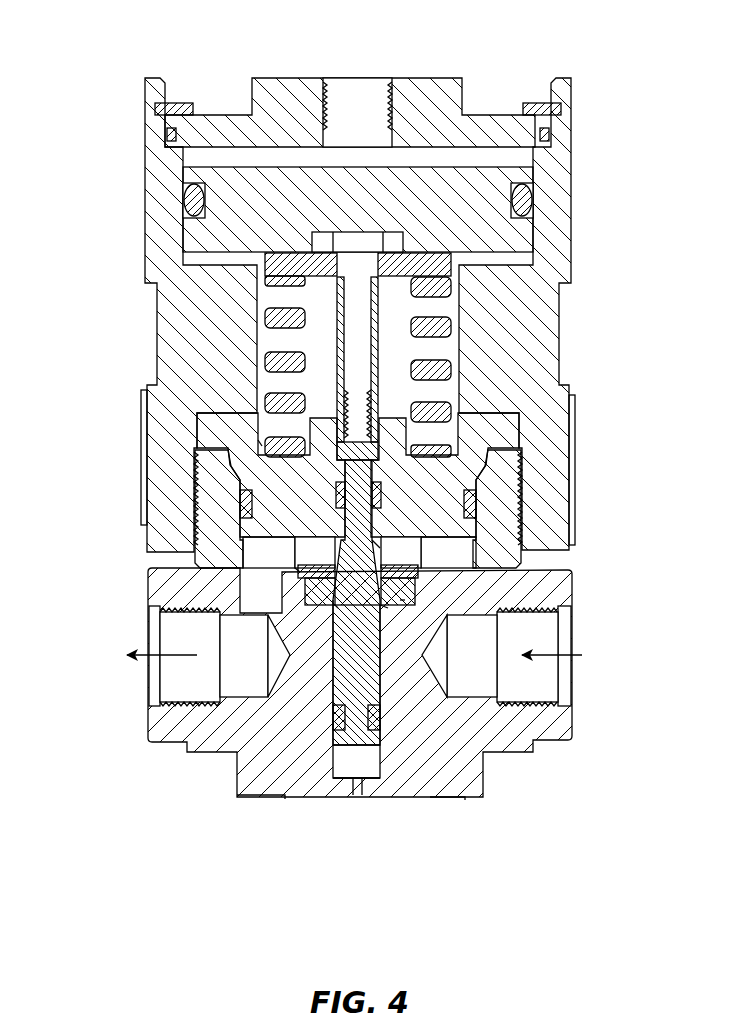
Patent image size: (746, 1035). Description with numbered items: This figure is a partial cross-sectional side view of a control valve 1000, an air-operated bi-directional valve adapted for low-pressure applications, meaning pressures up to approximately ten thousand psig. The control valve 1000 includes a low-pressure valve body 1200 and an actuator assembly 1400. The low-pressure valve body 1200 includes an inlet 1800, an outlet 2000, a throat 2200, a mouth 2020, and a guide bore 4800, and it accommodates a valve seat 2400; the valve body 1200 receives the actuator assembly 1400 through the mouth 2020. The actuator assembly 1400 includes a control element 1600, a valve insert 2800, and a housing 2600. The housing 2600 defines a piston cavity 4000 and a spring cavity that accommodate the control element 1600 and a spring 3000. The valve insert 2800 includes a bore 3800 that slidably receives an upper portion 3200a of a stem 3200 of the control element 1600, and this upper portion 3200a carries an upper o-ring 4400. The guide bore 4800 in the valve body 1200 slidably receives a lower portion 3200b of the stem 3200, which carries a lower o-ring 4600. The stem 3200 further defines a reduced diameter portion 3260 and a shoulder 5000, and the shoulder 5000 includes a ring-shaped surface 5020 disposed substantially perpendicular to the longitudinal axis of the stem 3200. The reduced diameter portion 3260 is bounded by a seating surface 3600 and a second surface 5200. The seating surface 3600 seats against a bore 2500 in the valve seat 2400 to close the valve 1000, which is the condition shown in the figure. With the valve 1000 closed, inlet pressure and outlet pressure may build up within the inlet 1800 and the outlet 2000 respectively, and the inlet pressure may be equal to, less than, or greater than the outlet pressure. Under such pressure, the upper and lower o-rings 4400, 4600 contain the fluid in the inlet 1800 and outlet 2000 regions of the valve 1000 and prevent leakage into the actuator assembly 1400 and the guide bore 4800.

The control valve 1000 is at (576, 56).
The low-pressure valve body 1200 is at (582, 590).
The actuator assembly 1400 is at (582, 240).
The control element 1600 is at (328, 337).
The inlet 1800 is at (550, 680).
The outlet 2000 is at (157, 682).
The mouth 2020 is at (215, 462).
The throat 2200 is at (400, 600).
The valve seat 2400 is at (322, 583).
The bore 2500 is at (388, 608).
The housing 2600 is at (553, 195).
The valve insert 2800 is at (520, 413).
The spring 3000 is at (445, 325).
The stem 3200 is at (358, 385).
The upper portion 3200a is at (262, 446).
The lower portion 3200b is at (345, 795).
The reduced diameter portion 3260 is at (362, 553).
The seating surface 3600 is at (300, 568).
The bore 3800 is at (380, 523).
The piston cavity 4000 is at (482, 153).
The upper o-ring 4400 is at (243, 498).
The lower o-ring 4600 is at (345, 745).
The guide bore 4800 is at (374, 732).
The shoulder 5000 is at (330, 600).
The ring-shaped surface 5020 is at (335, 605).
The second surface 5200 is at (297, 548).